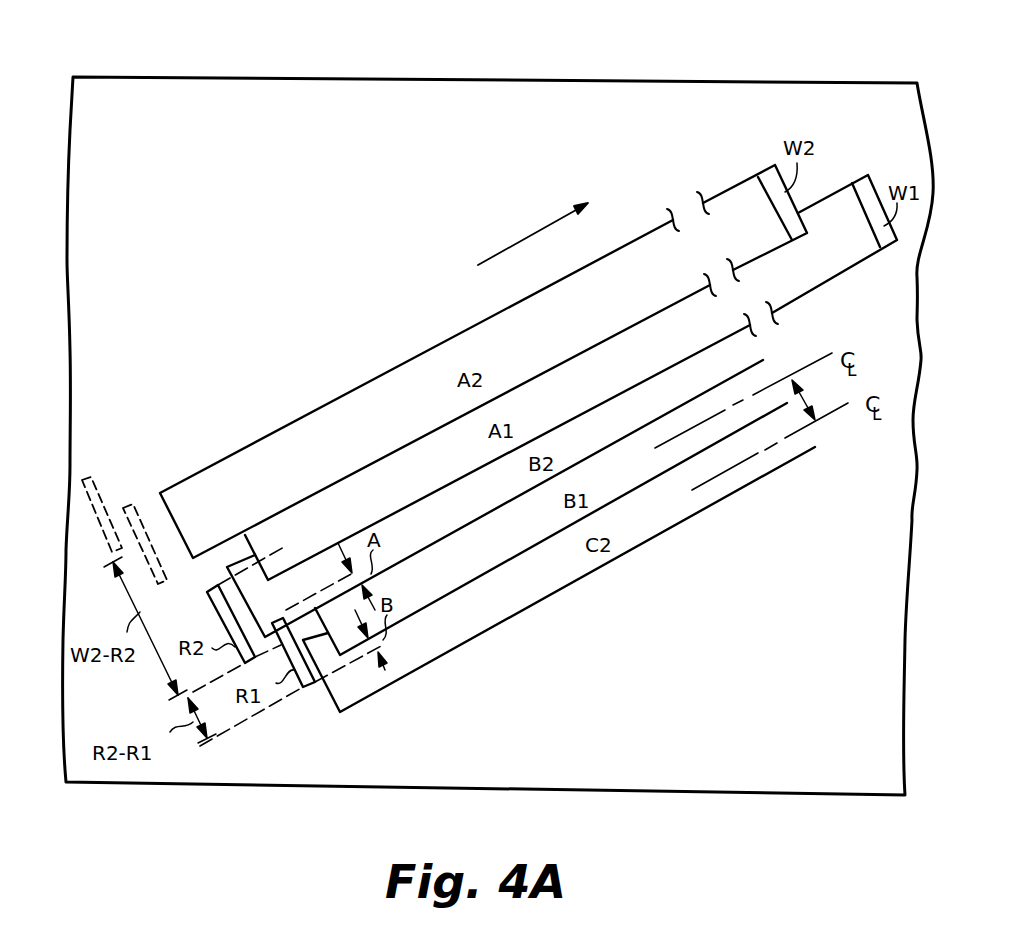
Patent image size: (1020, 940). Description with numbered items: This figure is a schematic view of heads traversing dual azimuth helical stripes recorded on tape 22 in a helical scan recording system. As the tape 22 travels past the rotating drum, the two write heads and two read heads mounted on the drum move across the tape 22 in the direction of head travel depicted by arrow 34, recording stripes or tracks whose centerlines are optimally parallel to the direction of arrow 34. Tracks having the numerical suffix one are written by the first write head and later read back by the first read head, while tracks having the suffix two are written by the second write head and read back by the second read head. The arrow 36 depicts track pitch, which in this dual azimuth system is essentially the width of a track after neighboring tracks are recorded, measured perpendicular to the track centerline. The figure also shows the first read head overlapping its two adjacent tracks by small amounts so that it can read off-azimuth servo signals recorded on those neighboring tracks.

The tape 22 is at (343, 78).
The arrow 34 is at (536, 234).
The arrow 36 is at (813, 418).